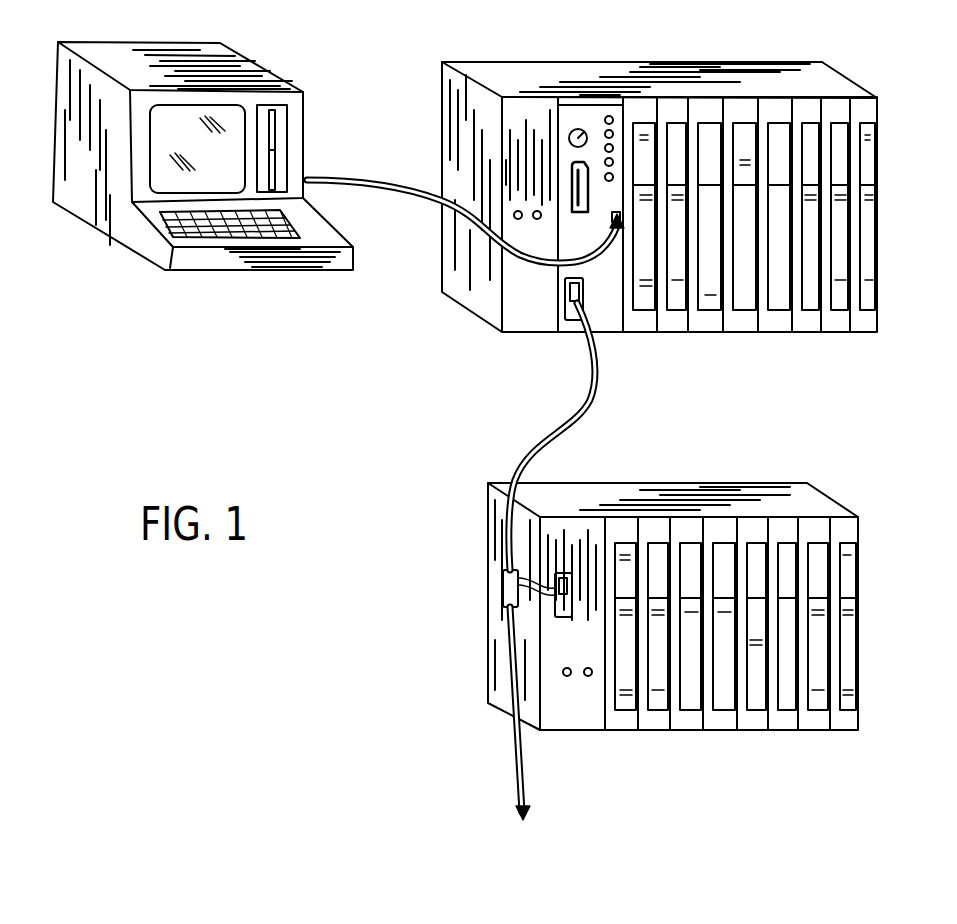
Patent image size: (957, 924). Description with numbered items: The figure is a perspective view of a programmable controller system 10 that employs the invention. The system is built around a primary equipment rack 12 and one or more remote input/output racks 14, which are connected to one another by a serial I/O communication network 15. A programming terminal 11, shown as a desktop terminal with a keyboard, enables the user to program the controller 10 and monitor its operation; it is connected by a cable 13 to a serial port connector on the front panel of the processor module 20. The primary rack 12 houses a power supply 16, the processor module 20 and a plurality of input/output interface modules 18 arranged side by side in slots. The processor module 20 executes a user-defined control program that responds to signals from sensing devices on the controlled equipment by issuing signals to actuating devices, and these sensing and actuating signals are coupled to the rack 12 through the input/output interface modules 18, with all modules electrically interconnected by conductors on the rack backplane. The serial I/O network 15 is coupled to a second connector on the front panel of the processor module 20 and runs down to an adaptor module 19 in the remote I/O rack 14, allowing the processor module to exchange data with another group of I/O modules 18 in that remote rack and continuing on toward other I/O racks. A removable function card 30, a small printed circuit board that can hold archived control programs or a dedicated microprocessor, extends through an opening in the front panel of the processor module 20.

The programmable controller system 10 is at (402, 338).
The programming terminal 11 is at (315, 147).
The primary equipment rack 12 is at (659, 396).
The cable 13 is at (425, 203).
The remote input/output rack 14 is at (673, 612).
The serial I/O communication network 15 is at (565, 413).
The power supply 16 is at (535, 322).
The input/output interface modules 18 is at (863, 332).
The adaptor module 19 is at (567, 730).
The processor module 20 is at (612, 322).
The function card 30 is at (590, 215).